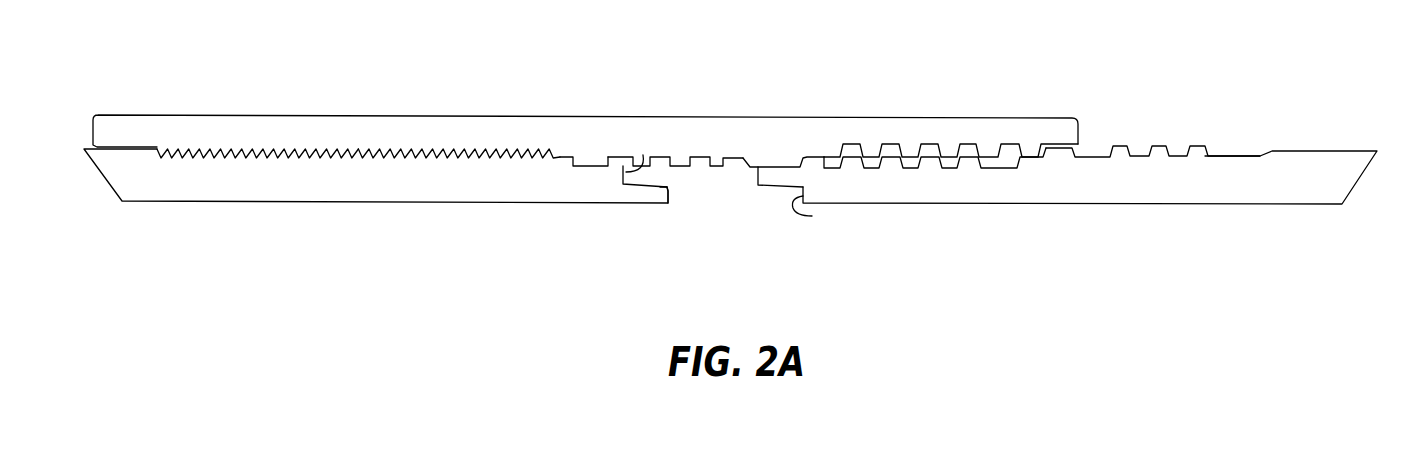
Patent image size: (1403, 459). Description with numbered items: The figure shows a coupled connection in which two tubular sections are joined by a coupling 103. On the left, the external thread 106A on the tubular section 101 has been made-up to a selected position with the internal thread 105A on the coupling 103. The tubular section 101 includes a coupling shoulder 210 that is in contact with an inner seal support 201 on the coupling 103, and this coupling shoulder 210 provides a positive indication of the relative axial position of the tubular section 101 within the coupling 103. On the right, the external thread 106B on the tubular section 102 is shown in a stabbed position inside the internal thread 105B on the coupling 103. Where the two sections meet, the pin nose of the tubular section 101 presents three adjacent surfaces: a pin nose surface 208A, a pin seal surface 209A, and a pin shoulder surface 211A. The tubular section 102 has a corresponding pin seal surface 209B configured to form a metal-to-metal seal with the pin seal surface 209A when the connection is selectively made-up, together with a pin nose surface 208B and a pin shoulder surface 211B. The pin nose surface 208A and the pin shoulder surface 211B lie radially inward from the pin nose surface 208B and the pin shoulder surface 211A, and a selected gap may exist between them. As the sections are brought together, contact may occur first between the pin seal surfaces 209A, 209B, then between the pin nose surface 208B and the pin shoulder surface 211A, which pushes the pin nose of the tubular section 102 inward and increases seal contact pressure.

The tubular section 101 is at (163, 202).
The tubular section 102 is at (1250, 205).
The coupling 103 is at (167, 115).
The internal thread 105A is at (313, 149).
The internal thread 105B is at (970, 142).
The external thread 106A is at (300, 163).
The external thread 106B is at (1123, 146).
The inner seal support 201 is at (590, 166).
The coupling shoulder 210 is at (583, 166).
The pin shoulder surface 211A is at (643, 155).
The pin shoulder surface 211B is at (812, 216).
The pin seal surface 209A is at (655, 183).
The pin seal surface 209B is at (775, 190).
The pin nose surface 208A is at (668, 195).
The pin nose surface 208B is at (755, 184).